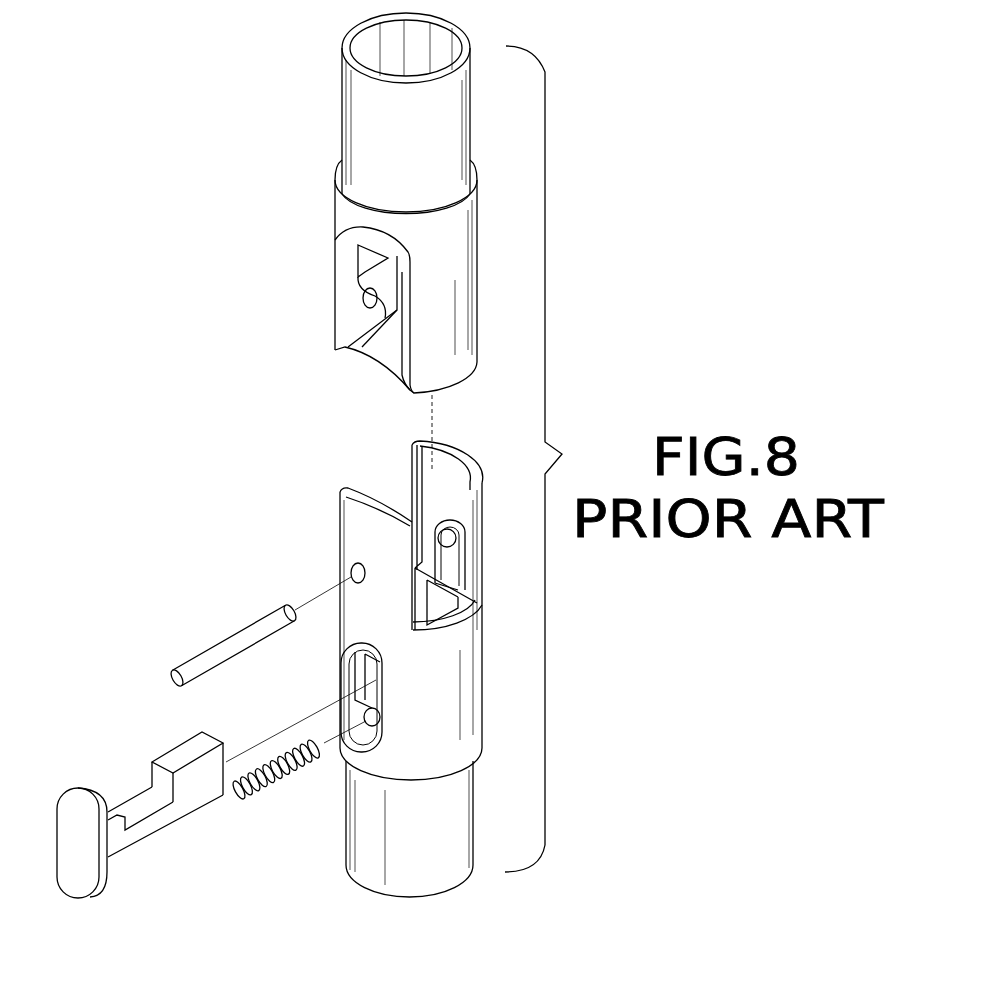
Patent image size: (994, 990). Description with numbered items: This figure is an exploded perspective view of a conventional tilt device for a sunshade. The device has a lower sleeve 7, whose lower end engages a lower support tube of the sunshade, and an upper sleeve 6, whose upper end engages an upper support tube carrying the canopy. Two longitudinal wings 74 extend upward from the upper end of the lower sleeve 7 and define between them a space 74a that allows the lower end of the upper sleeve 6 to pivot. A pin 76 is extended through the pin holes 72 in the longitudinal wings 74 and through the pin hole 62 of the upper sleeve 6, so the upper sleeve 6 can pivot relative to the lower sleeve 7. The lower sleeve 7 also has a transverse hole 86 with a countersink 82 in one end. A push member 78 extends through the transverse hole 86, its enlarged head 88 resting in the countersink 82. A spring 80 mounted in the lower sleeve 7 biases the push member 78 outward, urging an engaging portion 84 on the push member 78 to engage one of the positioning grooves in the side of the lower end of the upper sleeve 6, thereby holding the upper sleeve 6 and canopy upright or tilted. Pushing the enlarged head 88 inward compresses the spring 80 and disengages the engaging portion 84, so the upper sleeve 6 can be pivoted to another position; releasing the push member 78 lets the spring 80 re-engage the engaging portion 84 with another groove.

The upper sleeve 6 is at (321, 136).
The pin hole 62 is at (355, 306).
The lower sleeve 7 is at (470, 675).
The longitudinal wings 74 is at (352, 522).
The space 74a is at (388, 482).
The pin holes 72 is at (351, 573).
The pin 76 is at (225, 645).
The push member 78 is at (193, 797).
The spring 80 is at (288, 778).
The countersink 82 is at (380, 732).
The engaging portion 84 is at (185, 748).
The transverse hole 86 is at (372, 668).
The enlarged head 88 is at (78, 872).